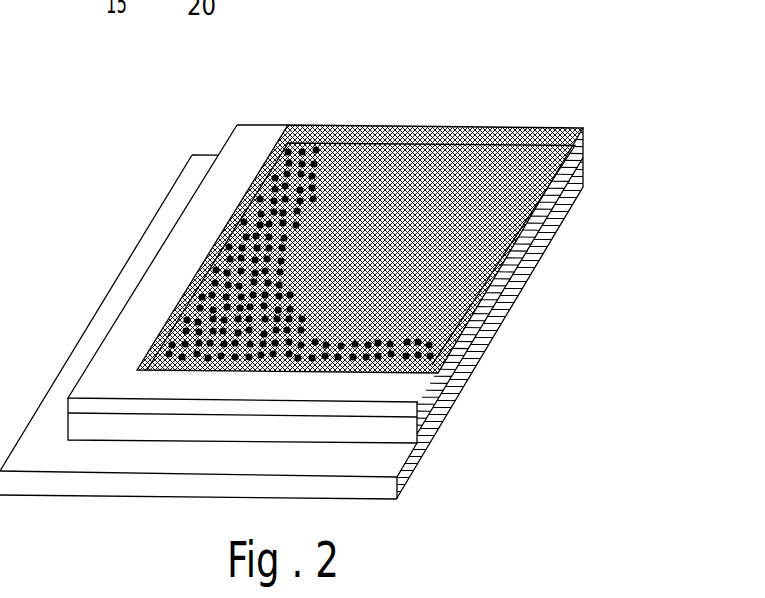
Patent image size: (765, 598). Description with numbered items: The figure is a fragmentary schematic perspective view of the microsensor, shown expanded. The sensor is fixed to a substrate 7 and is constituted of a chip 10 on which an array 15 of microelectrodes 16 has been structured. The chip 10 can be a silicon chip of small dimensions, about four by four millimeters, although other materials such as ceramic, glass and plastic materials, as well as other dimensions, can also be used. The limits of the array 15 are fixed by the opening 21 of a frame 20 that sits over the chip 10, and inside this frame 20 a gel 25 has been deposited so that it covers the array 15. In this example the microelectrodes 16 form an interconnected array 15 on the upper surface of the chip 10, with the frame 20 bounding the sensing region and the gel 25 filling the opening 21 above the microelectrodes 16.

The substrate 7 is at (52, 485).
The chip 10 is at (133, 427).
The array 15 is at (423, 202).
The microelectrodes 16 is at (317, 148).
The frame 20 is at (172, 267).
The opening 21 is at (263, 178).
The gel 25 is at (518, 248).